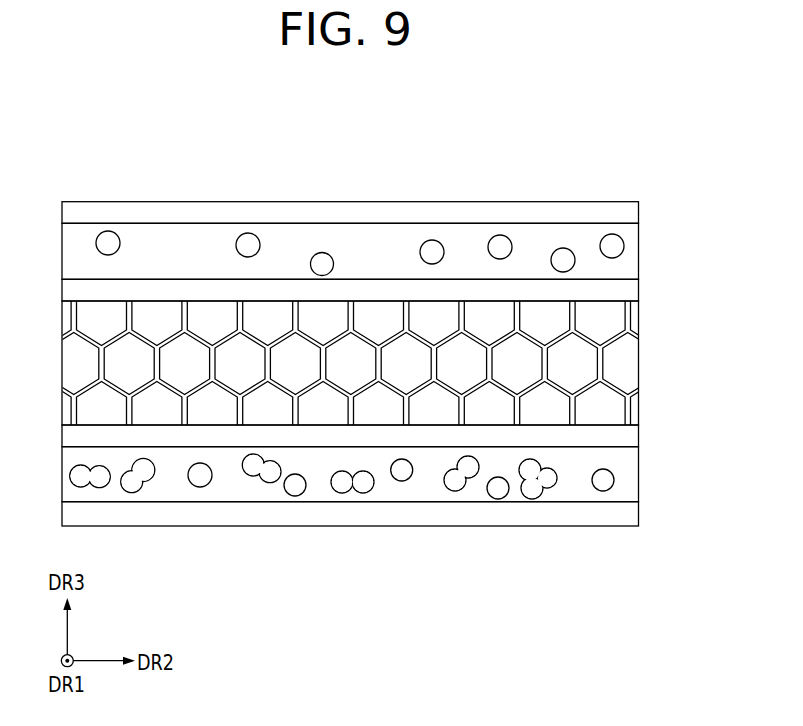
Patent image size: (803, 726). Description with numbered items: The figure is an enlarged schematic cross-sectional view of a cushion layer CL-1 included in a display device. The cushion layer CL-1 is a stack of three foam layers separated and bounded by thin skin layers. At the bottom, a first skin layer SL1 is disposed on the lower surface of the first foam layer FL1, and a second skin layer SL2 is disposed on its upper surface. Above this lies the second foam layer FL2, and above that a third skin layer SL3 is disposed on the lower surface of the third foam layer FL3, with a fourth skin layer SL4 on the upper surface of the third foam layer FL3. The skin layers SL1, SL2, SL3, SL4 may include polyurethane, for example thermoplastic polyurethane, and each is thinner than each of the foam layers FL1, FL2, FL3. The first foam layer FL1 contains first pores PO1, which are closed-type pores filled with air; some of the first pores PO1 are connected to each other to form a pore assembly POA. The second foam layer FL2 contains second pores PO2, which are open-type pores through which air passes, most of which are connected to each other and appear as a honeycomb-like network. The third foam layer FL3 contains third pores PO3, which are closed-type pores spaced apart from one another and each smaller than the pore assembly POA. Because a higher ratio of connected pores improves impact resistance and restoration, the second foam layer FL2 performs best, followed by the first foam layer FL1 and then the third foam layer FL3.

The cushion layer CL-1 is at (657, 142).
The fourth skin layer SL4 is at (628, 214).
The third foam layer FL3 is at (628, 266).
The third skin layer SL3 is at (628, 292).
The second foam layer FL2 is at (628, 328).
The second skin layer SL2 is at (628, 437).
The first foam layer FL1 is at (628, 484).
The first skin layer SL1 is at (628, 515).
The first pore PO1 is at (198, 482).
The second pore PO2 is at (380, 318).
The third pore PO3 is at (500, 242).
The pore assembly POA is at (343, 488).